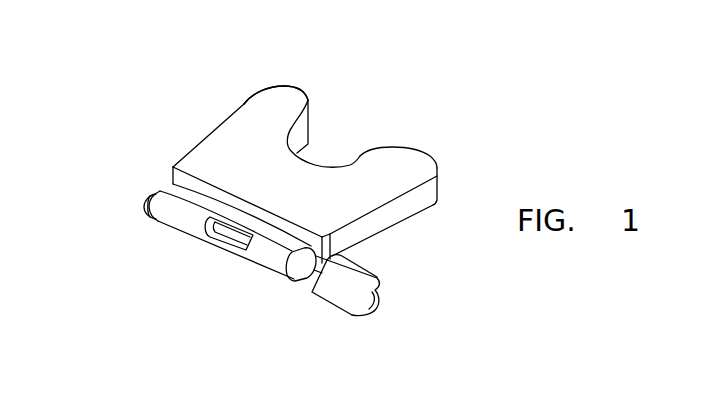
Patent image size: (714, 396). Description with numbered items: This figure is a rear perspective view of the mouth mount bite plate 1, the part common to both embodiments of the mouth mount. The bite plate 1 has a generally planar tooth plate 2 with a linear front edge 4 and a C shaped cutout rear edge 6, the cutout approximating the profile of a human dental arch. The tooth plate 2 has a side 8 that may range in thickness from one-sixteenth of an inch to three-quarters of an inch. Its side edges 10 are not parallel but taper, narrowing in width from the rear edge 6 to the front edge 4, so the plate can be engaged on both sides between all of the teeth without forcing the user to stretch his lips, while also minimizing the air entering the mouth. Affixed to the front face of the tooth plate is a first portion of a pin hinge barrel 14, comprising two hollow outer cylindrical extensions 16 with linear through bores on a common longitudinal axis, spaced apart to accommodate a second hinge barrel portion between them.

The bite plate 1 is at (118, 275).
The tooth plate 2 is at (243, 115).
The front edge 4 is at (177, 165).
The rear edge 6 is at (360, 156).
The side 8 is at (397, 213).
The side edges 10 is at (210, 135).
The first portion of a pin hinge barrel 14 is at (228, 238).
The hollow outer cylindrical extensions 16 is at (176, 201).